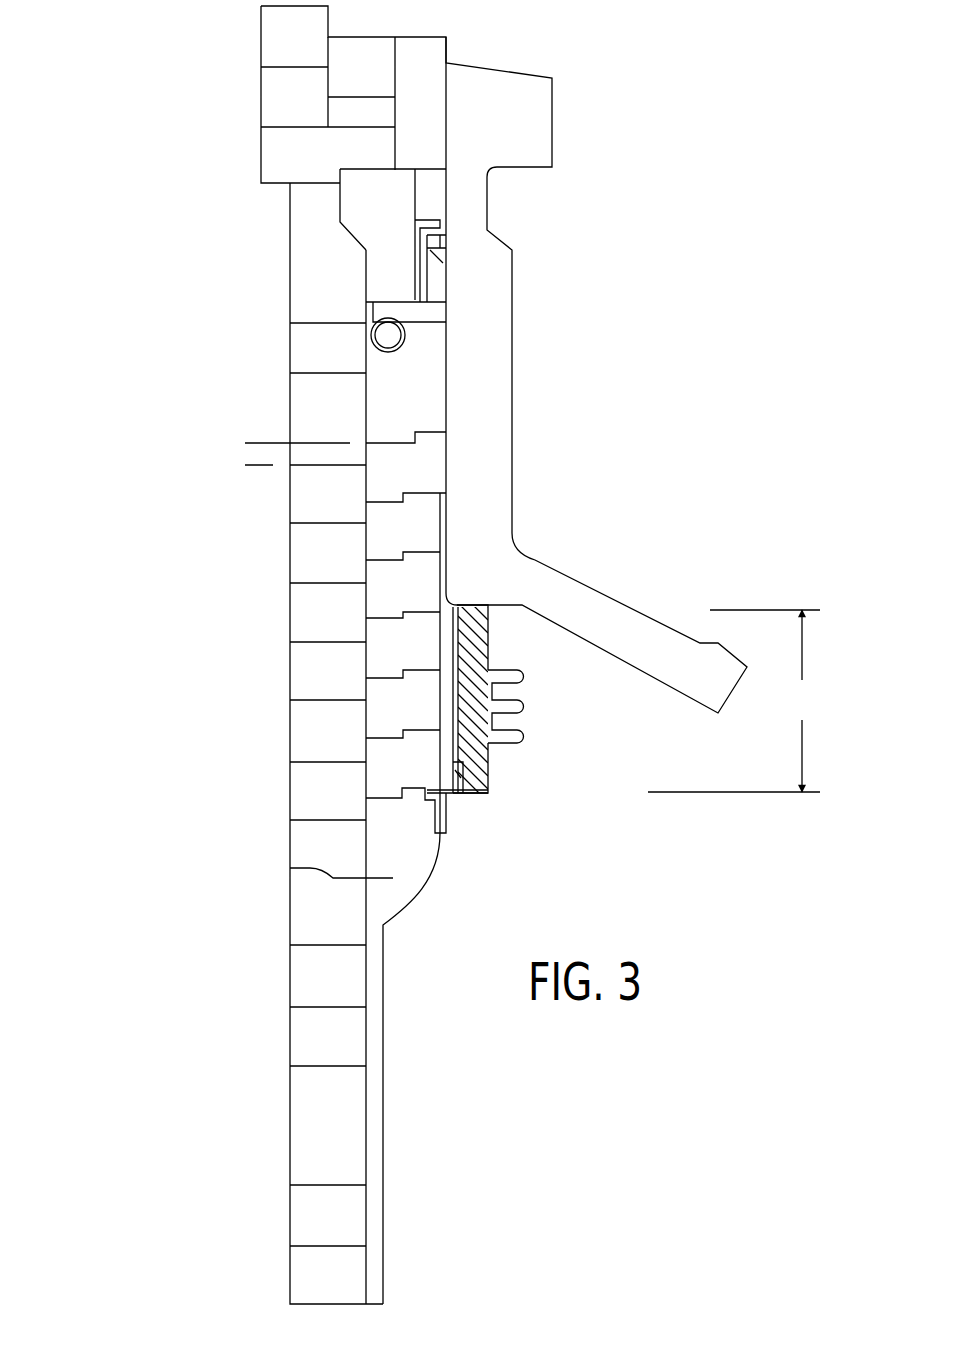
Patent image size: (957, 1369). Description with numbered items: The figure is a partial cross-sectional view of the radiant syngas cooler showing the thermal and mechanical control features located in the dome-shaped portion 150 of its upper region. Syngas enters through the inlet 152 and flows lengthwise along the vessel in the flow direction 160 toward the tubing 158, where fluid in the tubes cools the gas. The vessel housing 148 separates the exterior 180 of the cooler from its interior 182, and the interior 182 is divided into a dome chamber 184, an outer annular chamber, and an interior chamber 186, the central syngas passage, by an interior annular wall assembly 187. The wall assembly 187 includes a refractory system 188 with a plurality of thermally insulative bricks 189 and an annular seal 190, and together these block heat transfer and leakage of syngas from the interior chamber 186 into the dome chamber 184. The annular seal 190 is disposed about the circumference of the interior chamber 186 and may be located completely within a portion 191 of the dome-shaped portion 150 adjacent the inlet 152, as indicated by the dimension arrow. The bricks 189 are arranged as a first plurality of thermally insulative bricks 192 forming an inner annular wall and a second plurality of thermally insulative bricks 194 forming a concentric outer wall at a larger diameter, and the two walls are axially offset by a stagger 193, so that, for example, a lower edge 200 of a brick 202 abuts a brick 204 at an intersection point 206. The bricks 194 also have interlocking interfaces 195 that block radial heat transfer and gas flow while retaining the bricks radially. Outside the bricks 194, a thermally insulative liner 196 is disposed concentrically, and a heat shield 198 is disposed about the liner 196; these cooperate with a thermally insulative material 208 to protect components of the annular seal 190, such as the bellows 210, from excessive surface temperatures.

The vessel housing 148 is at (628, 597).
The dome-shaped portion 150 is at (600, 585).
The inlet 152 is at (261, 50).
The tubing 158 is at (373, 953).
The flow direction 160 is at (163, 602).
The exterior 180 is at (587, 530).
The interior 182 is at (562, 802).
The dome chamber 184 is at (445, 1062).
The interior chamber 186 is at (255, 1150).
The interior annular wall assembly 187 is at (258, 782).
The refractory system 188 is at (455, 802).
The thermally insulative bricks 189 is at (318, 743).
The annular seal 190 is at (575, 718).
The portion 191 is at (734, 701).
The first plurality of thermally insulative bricks 192 is at (302, 355).
The axial offset or stagger 193 is at (260, 493).
The second plurality of thermally insulative bricks 194 is at (430, 458).
The interlocking interfaces 195 is at (415, 425).
The thermally insulative liner 196 is at (470, 793).
The heat shield 198 is at (463, 762).
The lower edge 200 is at (283, 527).
The brick 202 is at (283, 498).
The brick 204 is at (430, 522).
The intersection point 206 is at (373, 524).
The thermally insulative material 208 is at (480, 622).
The bellows 210 is at (532, 677).